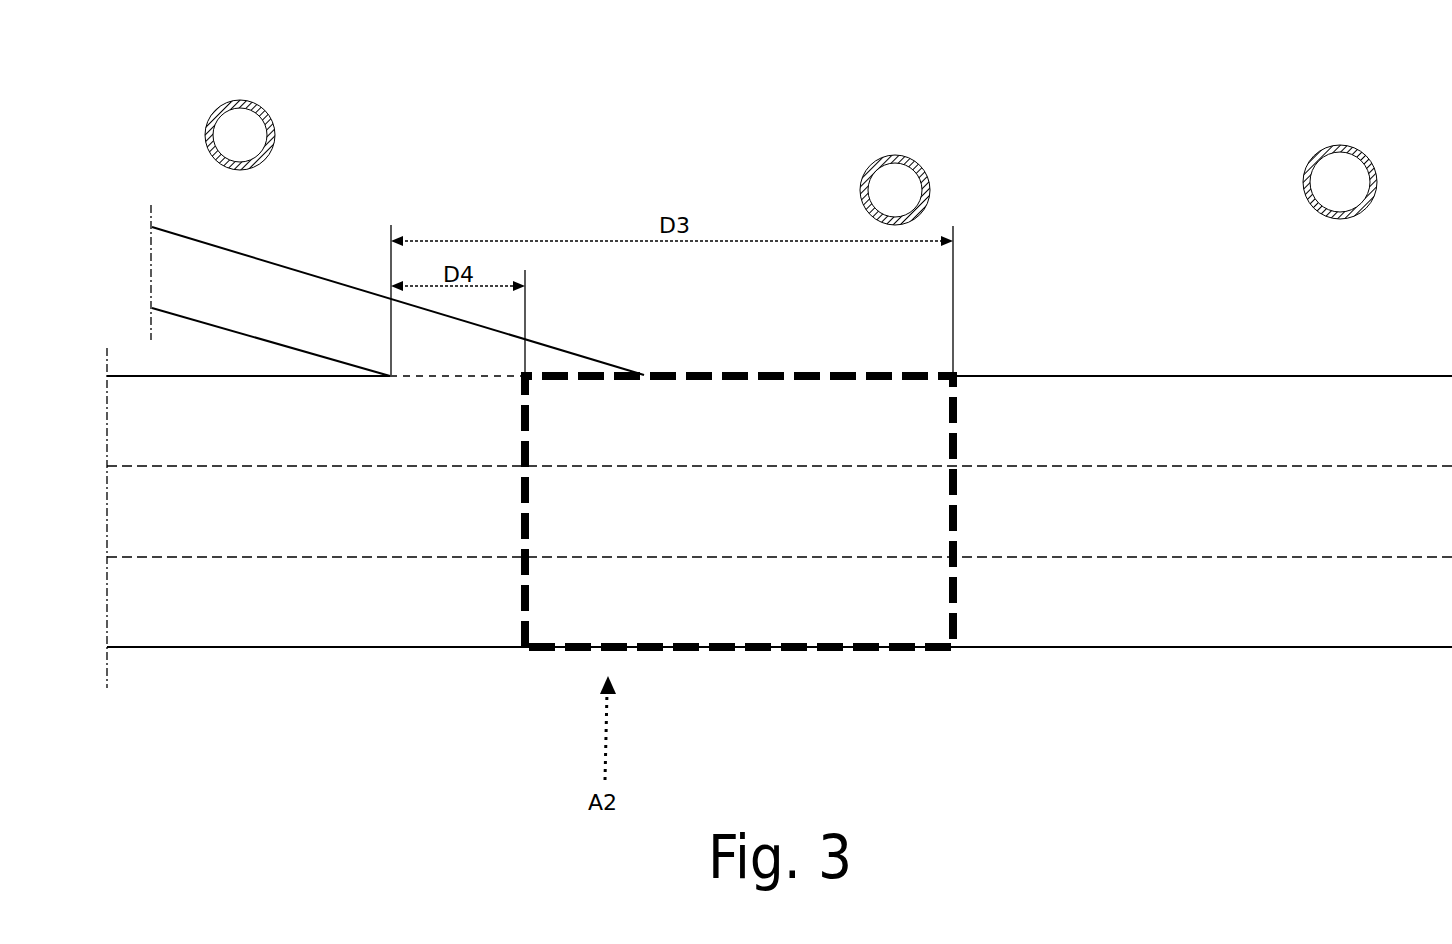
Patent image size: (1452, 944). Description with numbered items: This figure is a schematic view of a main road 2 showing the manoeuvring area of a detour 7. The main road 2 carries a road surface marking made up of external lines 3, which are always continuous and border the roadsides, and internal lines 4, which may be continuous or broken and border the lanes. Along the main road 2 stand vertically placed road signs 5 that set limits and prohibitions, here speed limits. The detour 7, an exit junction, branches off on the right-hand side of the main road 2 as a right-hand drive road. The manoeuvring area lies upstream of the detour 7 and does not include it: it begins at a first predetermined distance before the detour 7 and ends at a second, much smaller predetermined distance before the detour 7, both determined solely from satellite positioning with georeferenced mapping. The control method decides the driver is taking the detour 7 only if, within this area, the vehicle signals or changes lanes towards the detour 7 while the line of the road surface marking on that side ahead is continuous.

The main road 2 is at (434, 712).
The external lines 3 is at (289, 265).
The internal lines 4 is at (135, 460).
The road signs 5 is at (240, 100).
The detour 7 is at (352, 208).